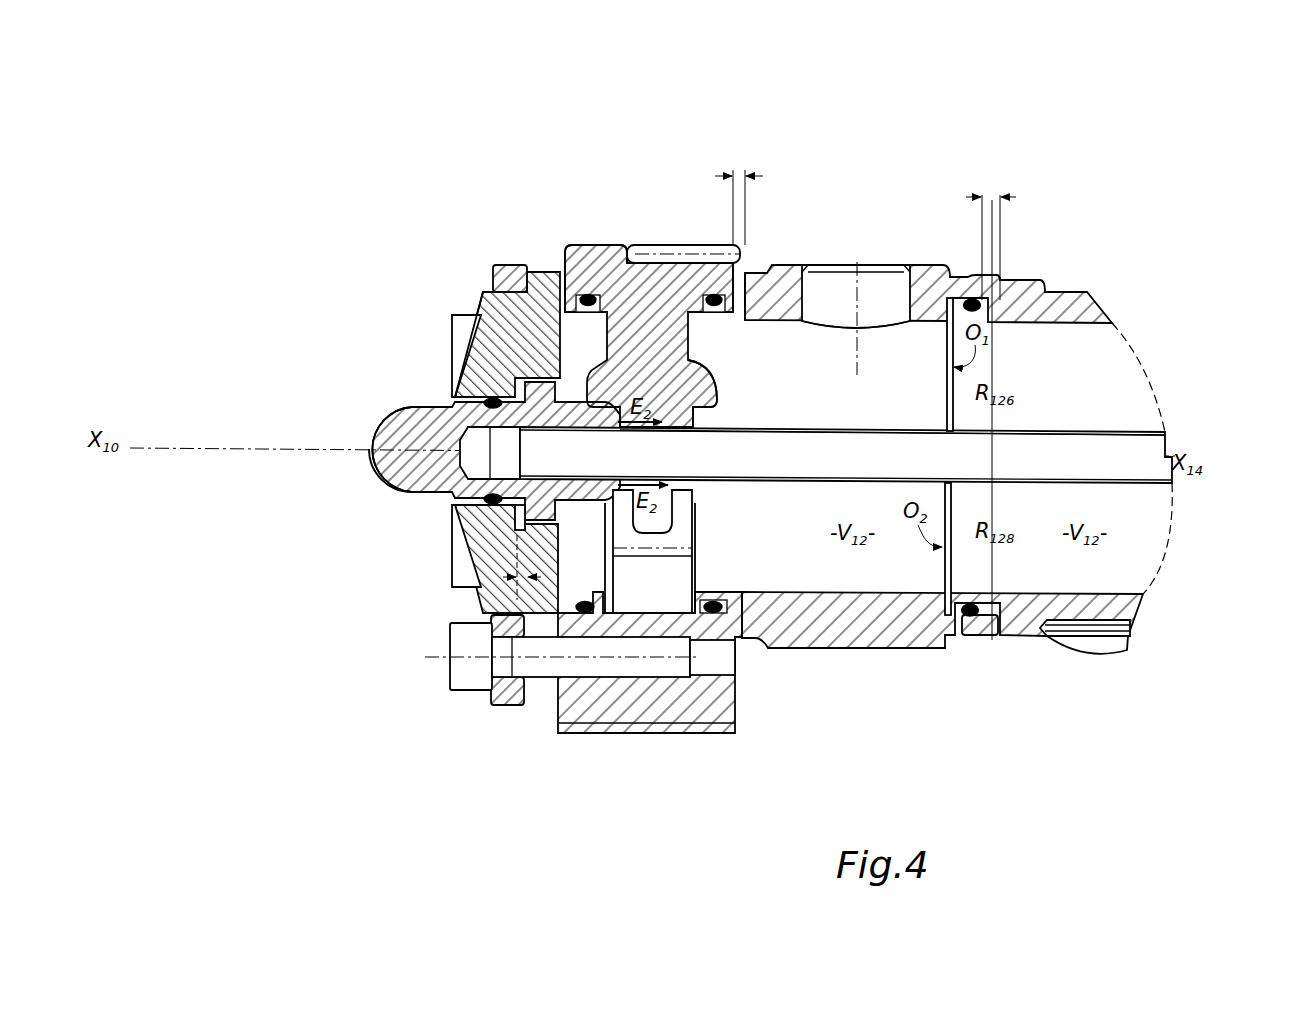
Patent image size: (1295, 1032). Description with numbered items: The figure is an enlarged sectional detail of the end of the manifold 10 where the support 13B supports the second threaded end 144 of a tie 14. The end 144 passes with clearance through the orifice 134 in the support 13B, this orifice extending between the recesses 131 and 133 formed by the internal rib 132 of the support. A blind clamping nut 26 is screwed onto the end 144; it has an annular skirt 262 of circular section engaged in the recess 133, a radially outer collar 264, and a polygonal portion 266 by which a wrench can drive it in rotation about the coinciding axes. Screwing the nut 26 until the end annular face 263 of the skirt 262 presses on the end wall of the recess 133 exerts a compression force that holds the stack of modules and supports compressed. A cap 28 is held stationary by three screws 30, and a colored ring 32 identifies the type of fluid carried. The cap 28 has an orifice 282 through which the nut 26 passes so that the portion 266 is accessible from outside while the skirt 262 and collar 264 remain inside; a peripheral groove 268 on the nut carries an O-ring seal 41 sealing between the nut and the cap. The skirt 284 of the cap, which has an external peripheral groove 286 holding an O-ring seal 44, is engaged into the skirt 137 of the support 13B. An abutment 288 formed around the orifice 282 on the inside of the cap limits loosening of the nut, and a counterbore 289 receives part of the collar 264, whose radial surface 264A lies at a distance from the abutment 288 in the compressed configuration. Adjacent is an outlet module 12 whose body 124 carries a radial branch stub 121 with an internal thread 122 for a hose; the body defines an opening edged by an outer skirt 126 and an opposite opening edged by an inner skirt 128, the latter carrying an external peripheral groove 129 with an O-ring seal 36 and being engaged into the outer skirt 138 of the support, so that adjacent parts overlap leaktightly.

The manifold 10 is at (1078, 278).
The outlet module 12 is at (822, 650).
The support 13B is at (602, 290).
The tie 14 is at (1160, 433).
The blind clamping nut 26 is at (362, 465).
The cap 28 is at (452, 397).
The screw 30 is at (455, 318).
The colored ring 32 is at (506, 265).
The O-ring seal 36 is at (966, 630).
The O-ring seal 41 is at (457, 503).
The O-ring seal 44 is at (588, 650).
The branch stub 121 is at (812, 300).
The thread 122 is at (857, 305).
The body 124 is at (878, 648).
The outer skirt 126 is at (966, 285).
The inner skirt 128 is at (712, 605).
The external peripheral groove 129 is at (716, 614).
The recess 131 is at (708, 417).
The internal rib 132 is at (752, 300).
The recess 133 is at (486, 394).
The orifice 134 is at (672, 430).
The skirt 137 is at (660, 245).
The outer skirt 138 is at (700, 298).
The second threaded end 144 is at (415, 494).
The annular skirt 262 is at (600, 480).
The end annular face 263 is at (700, 442).
The radially outer collar 264 is at (455, 330).
The radial surface 264A is at (460, 508).
The polygonal portion 266 is at (372, 478).
The peripheral groove 268 is at (452, 385).
The orifice 282 is at (400, 407).
The skirt 284 is at (606, 300).
The external peripheral groove 286 is at (570, 255).
The abutment 288 is at (555, 516).
The counterbore 289 is at (522, 405).